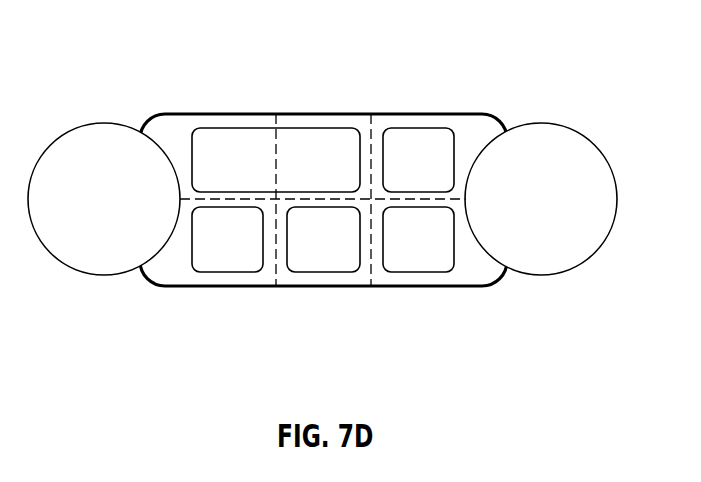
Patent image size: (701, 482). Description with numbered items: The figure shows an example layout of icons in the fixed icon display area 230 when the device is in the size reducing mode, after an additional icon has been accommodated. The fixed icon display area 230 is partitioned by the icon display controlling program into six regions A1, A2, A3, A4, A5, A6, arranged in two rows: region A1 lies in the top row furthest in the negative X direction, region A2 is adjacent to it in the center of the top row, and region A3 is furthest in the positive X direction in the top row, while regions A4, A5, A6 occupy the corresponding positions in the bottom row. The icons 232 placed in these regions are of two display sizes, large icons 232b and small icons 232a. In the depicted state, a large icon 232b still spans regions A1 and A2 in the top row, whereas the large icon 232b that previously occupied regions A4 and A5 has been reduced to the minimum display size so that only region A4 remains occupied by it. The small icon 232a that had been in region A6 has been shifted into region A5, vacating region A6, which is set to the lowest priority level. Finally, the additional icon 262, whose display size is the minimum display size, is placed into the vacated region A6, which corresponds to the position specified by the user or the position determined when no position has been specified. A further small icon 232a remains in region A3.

The fixed icon display area 230 is at (150, 117).
The icons 232 is at (325, 203).
The small icons 232a is at (315, 240).
The large icons 232b is at (229, 145).
The additional icon 262 is at (405, 227).
The region A1 is at (190, 127).
The region A2 is at (288, 122).
The region A3 is at (468, 125).
The region A4 is at (167, 272).
The region A5 is at (362, 268).
The region A6 is at (477, 272).